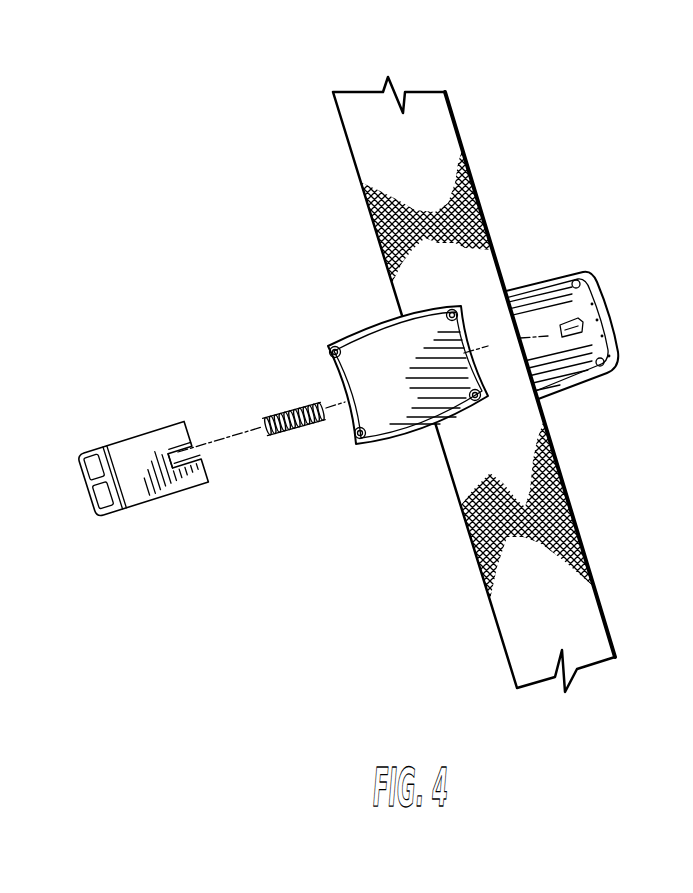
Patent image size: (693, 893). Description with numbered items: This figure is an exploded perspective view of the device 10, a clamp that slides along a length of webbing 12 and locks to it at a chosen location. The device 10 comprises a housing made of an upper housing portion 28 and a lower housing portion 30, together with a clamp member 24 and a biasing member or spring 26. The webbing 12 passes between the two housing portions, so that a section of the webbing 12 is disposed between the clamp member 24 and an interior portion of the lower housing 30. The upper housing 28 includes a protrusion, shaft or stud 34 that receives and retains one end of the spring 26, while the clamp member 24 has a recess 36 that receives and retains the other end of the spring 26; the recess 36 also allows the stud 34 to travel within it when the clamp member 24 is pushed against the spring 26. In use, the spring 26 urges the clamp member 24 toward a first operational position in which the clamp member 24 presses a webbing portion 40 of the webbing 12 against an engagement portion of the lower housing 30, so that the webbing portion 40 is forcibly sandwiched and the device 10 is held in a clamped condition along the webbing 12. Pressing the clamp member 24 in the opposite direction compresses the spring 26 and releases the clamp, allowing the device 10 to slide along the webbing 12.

The device 10 is at (248, 575).
The webbing 12 is at (473, 188).
The clamp member 24 is at (158, 429).
The biasing member or spring 26 is at (279, 432).
The upper housing portion 28 is at (580, 300).
The lower housing portion 30 is at (355, 328).
The protrusion, shaft or stud 34 is at (570, 318).
The recess 36 is at (198, 452).
The webbing portion 40 is at (502, 373).